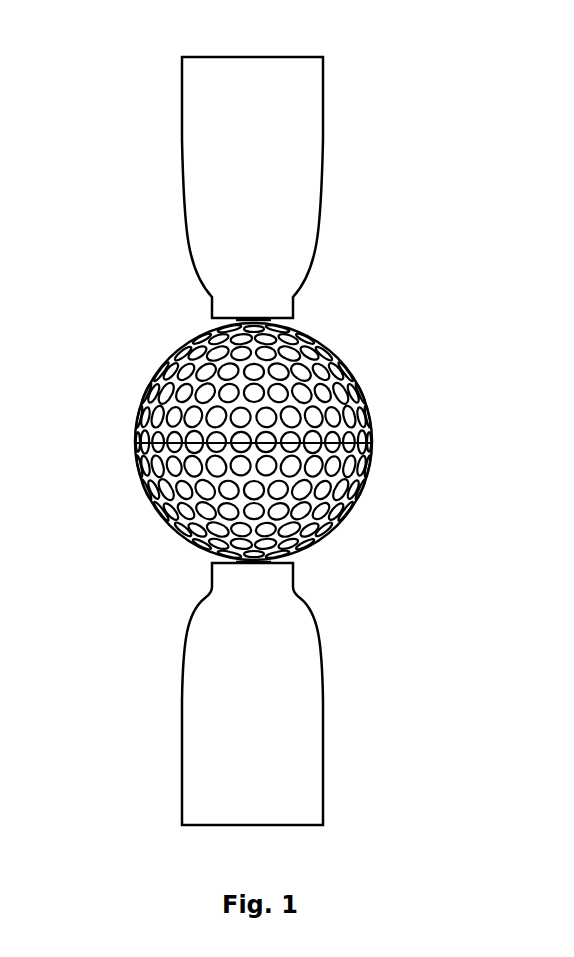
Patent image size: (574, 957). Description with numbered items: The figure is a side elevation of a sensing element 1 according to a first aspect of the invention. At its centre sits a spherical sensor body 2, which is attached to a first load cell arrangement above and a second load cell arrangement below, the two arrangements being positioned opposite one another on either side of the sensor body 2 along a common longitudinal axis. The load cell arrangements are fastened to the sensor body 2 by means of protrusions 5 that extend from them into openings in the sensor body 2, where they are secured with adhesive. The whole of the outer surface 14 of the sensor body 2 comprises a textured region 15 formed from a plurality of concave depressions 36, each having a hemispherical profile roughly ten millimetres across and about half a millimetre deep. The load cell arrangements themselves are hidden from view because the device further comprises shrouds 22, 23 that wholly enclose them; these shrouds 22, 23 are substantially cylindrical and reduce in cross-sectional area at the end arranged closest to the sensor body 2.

The sensing element 1 is at (258, 441).
The sensor body 2 is at (258, 441).
The protrusion 5 is at (272, 318).
The outer surface 14 is at (347, 368).
The textured region 15 is at (350, 463).
The shroud 22 is at (310, 213).
The shroud 23 is at (310, 728).
The concave depression 36 is at (187, 428).